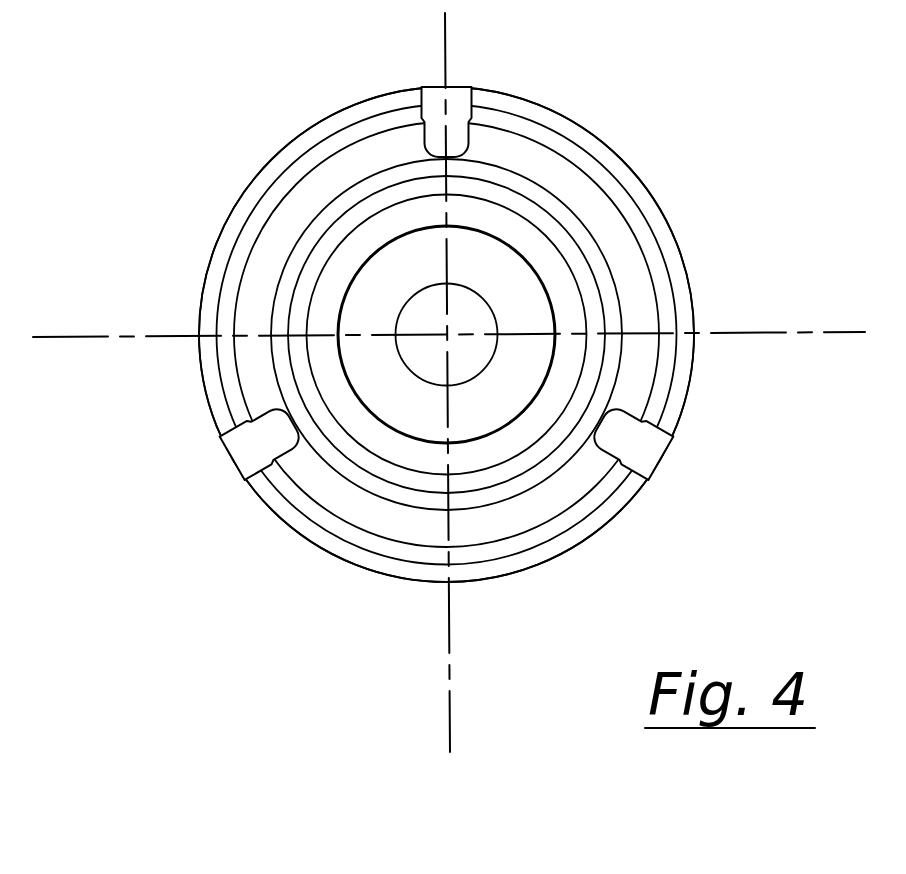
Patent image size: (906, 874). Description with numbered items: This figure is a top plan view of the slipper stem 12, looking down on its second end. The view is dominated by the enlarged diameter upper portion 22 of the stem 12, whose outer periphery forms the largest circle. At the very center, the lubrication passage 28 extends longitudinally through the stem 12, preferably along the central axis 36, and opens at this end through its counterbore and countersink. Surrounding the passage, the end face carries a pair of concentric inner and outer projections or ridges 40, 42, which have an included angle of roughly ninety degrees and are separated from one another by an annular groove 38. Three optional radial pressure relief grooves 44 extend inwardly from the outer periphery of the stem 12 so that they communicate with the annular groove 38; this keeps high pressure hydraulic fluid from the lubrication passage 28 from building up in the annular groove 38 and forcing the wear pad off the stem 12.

The stem 12 is at (586, 104).
The enlarged diameter upper portion 22 is at (212, 258).
The lubrication passage 28 is at (488, 358).
The central axis 36 is at (446, 334).
The annular groove 38 is at (273, 252).
The inner projection 40 is at (595, 273).
The outer projection 42 is at (328, 133).
The radial pressure relief grooves 44 is at (470, 105).